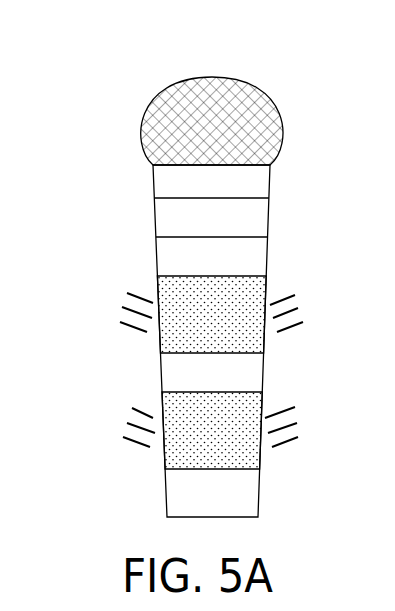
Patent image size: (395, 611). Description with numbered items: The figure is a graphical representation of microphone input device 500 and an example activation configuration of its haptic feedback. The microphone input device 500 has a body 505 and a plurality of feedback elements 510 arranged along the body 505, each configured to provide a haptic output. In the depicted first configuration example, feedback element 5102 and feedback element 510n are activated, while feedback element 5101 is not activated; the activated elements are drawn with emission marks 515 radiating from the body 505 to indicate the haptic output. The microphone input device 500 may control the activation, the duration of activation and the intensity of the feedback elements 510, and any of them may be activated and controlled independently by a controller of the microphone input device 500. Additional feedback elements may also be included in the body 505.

The microphone input device 500 is at (98, 105).
The body 505 is at (157, 253).
The feedback elements 510 is at (255, 325).
The feedback element 5101 is at (270, 212).
The feedback element 5102 is at (267, 290).
The feedback element 510n is at (263, 402).
The emitted light 515 is at (111, 337).